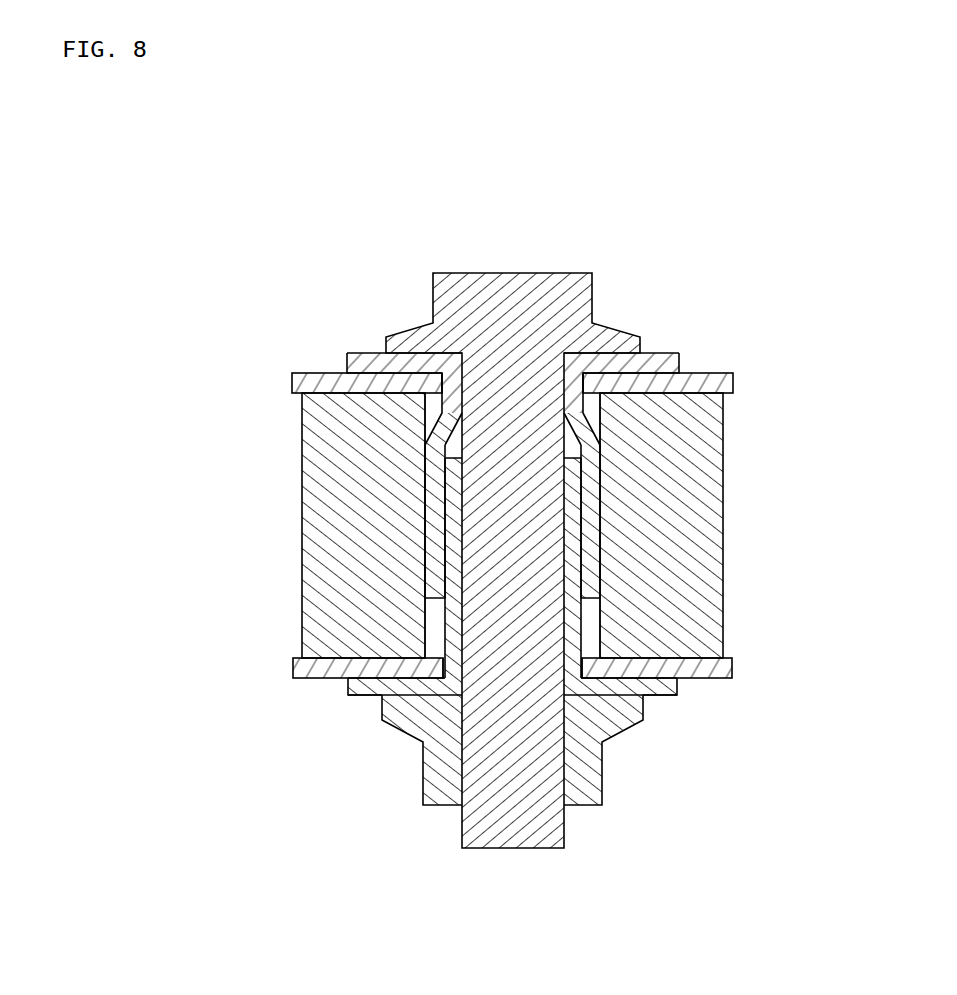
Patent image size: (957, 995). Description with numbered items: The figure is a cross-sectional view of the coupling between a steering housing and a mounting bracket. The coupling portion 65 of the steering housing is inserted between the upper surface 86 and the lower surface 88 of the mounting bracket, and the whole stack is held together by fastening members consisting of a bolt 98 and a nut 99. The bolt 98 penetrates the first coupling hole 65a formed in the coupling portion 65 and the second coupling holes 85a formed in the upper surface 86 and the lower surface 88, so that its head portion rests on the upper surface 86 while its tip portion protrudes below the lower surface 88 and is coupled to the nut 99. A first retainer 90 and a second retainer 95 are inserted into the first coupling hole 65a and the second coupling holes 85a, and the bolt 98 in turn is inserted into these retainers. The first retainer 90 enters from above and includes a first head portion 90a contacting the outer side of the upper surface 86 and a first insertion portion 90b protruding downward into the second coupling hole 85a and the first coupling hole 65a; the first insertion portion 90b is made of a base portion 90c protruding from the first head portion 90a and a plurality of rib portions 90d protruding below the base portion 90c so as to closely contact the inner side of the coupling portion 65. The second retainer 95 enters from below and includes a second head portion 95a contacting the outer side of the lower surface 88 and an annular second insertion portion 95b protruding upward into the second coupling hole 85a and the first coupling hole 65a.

The bolt 98 is at (510, 298).
The nut 99 is at (588, 775).
The first retainer 90 is at (622, 394).
The first head portion 90a is at (648, 355).
The first insertion portion 90b is at (657, 434).
The base portion 90c is at (578, 402).
The rib portions 90d is at (590, 507).
The upper surface 86 is at (292, 390).
The lower surface 88 is at (293, 677).
The second coupling hole 85a is at (412, 387).
The coupling portion 65 is at (690, 500).
The first coupling hole 65a is at (425, 532).
The second retainer 95 is at (650, 582).
The second head portion 95a is at (657, 688).
The second insertion portion 95b is at (568, 630).